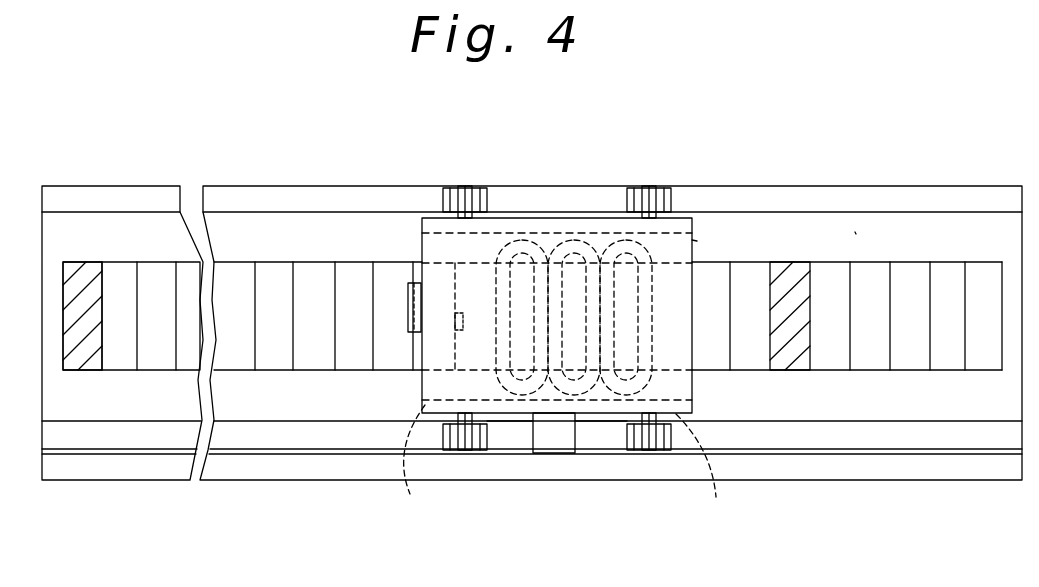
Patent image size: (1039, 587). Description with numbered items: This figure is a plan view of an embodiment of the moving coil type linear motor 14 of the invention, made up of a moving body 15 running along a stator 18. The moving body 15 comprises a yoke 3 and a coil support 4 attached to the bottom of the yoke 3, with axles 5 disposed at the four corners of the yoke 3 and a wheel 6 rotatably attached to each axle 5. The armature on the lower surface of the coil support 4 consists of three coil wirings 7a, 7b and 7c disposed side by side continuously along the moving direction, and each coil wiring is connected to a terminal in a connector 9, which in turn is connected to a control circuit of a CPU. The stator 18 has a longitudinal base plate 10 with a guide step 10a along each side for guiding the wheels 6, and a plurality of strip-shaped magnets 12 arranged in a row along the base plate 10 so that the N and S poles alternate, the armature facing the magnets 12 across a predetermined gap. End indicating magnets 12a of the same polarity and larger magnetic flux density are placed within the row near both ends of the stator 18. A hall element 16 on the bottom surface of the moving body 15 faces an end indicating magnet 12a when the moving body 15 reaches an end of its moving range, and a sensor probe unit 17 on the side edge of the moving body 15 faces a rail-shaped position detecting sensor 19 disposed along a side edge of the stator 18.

The yoke 3 is at (681, 215).
The coil support 4 is at (698, 472).
The axle 5 is at (466, 186).
The wheel 6 is at (447, 188).
The coil wiring 7a is at (518, 238).
The coil wiring 7b is at (570, 237).
The coil wiring 7c is at (620, 237).
The connector 9 is at (408, 283).
The base plate 10 is at (345, 186).
The guide step 10a is at (293, 205).
The magnet 12 is at (271, 277).
The end indicating magnet 12a is at (78, 278).
The moving coil type linear motor 14 is at (940, 172).
The moving body 15 is at (696, 241).
The hall element 16 is at (430, 392).
The sensor probe unit 17 is at (557, 435).
The stator 18 is at (855, 234).
The position detecting sensor 19 is at (518, 468).